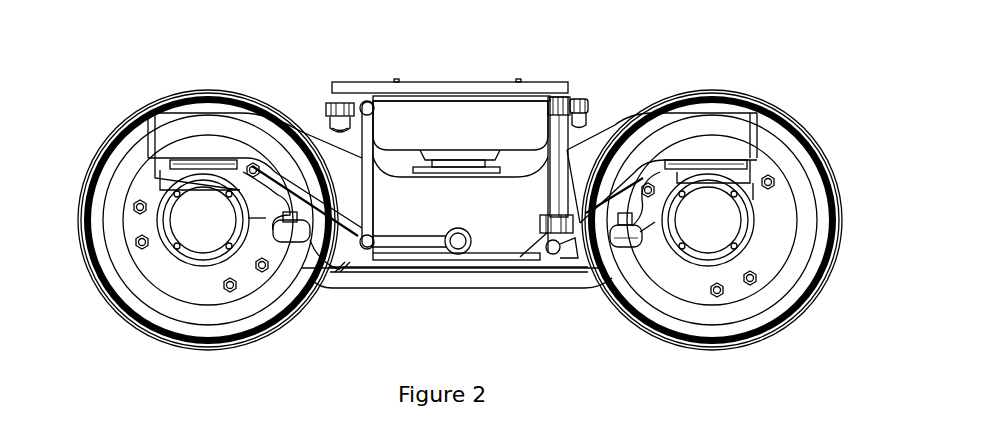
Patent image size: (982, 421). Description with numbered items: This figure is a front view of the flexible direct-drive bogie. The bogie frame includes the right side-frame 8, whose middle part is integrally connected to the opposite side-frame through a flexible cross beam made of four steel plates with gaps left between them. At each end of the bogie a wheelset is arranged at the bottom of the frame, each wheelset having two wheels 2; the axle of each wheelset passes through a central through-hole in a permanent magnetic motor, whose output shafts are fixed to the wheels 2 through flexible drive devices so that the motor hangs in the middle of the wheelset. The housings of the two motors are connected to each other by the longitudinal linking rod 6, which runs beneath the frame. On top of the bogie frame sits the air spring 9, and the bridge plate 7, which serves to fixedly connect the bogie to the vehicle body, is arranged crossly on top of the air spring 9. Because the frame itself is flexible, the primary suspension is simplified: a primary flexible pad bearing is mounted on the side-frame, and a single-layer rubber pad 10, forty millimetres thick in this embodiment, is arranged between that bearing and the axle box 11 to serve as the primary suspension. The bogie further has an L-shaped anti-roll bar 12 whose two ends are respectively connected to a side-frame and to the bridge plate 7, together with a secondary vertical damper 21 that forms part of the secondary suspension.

The wheel 2 is at (790, 200).
The longitudinal linking rod 6 is at (498, 278).
The bridge plate 7 is at (440, 92).
The right side-frame 8 is at (680, 130).
The air spring 9 is at (497, 125).
The rubber pad 10 is at (727, 160).
The axle box 11 is at (642, 238).
The anti-roll bar 12 is at (398, 242).
The secondary vertical damper 21 is at (588, 101).